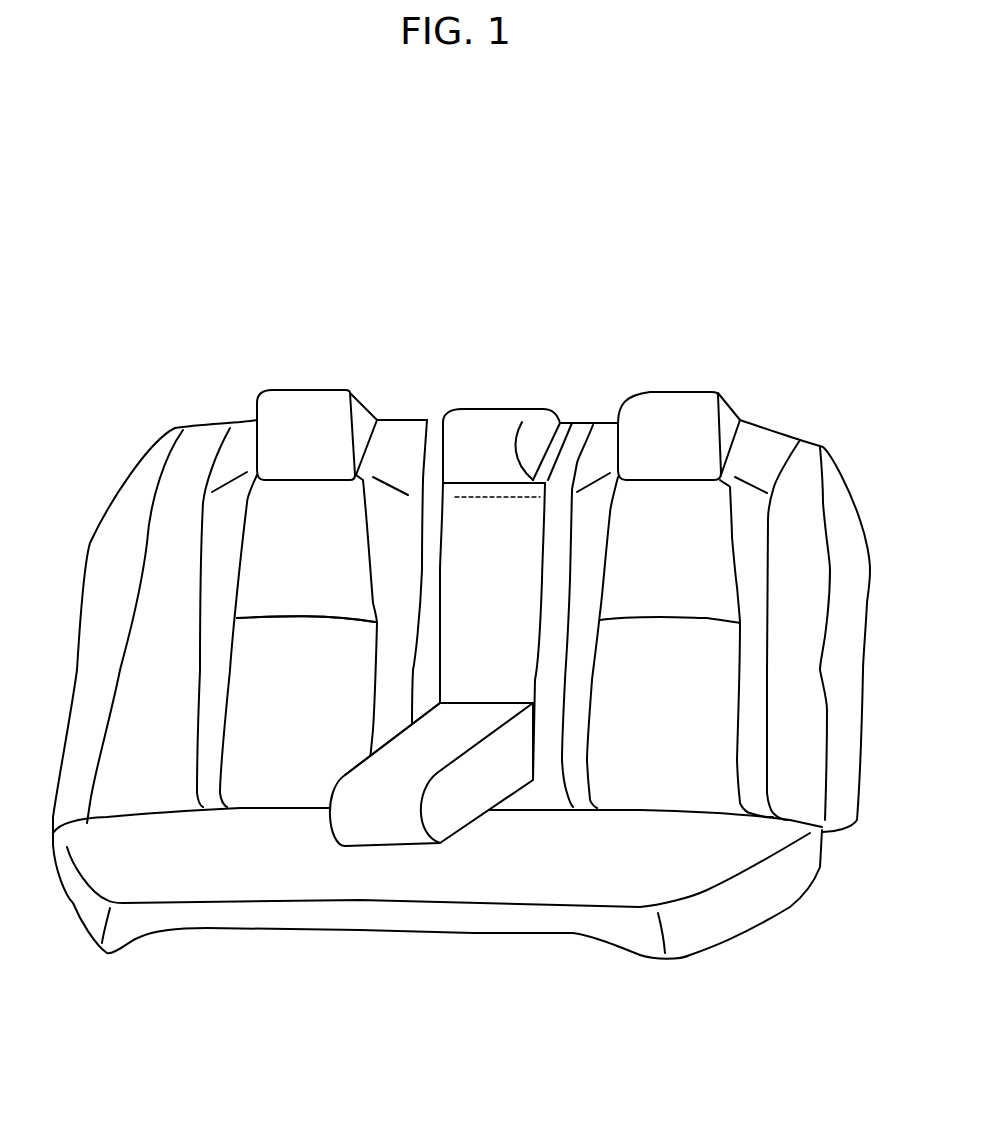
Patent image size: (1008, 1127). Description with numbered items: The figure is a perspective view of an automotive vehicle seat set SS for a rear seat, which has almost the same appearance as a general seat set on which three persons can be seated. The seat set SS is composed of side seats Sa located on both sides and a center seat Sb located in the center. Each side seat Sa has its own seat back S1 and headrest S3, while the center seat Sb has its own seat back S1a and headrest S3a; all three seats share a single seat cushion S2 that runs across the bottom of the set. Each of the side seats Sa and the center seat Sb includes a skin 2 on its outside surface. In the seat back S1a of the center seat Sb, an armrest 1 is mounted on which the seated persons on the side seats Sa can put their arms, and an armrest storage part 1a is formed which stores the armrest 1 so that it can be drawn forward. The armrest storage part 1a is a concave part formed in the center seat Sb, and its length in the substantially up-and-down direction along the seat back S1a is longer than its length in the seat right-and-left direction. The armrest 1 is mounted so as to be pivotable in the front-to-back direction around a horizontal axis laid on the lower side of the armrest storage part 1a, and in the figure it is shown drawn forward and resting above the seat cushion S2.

The automotive vehicle seat set SS is at (232, 155).
The side seat Sa is at (330, 355).
The center seat Sb is at (522, 355).
The seat back S1 is at (228, 457).
The seat cushion S2 is at (730, 913).
The headrest S3 is at (278, 403).
The seat back S1a is at (570, 423).
The headrest S3a is at (475, 427).
The armrest 1 is at (463, 810).
The armrest storage part 1a is at (465, 535).
The skin 2 is at (283, 777).